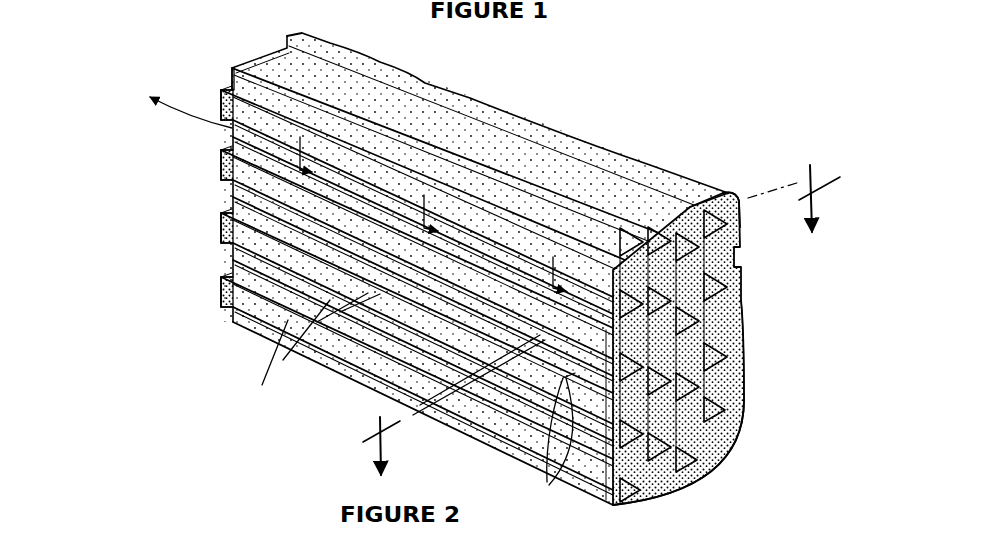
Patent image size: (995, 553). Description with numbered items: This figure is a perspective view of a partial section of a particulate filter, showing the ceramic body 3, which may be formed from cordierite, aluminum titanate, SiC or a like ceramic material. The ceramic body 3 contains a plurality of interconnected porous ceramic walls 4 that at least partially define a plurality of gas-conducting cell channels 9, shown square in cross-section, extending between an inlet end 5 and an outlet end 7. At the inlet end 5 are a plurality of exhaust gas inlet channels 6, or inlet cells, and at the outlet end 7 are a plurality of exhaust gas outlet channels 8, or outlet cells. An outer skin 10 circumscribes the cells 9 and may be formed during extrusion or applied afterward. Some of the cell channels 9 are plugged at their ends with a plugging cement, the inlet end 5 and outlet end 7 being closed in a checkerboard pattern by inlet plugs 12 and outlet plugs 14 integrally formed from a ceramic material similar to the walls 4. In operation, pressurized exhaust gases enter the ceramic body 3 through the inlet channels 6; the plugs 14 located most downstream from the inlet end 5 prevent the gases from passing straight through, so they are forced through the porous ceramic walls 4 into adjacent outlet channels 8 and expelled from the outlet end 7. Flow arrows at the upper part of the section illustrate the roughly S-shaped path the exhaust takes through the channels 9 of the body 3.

The ceramic body 3 is at (592, 300).
The porous ceramic walls 4 is at (547, 482).
The inlet end 5 is at (774, 318).
The exhaust gas inlet channels 6 is at (698, 192).
The outlet end 7 is at (224, 71).
The exhaust gas outlet channels 8 is at (226, 236).
The cell channels 9 is at (330, 300).
The outer skin 10 is at (680, 484).
The inlet plugs 12 is at (742, 364).
The outlet plugs 14 is at (223, 300).